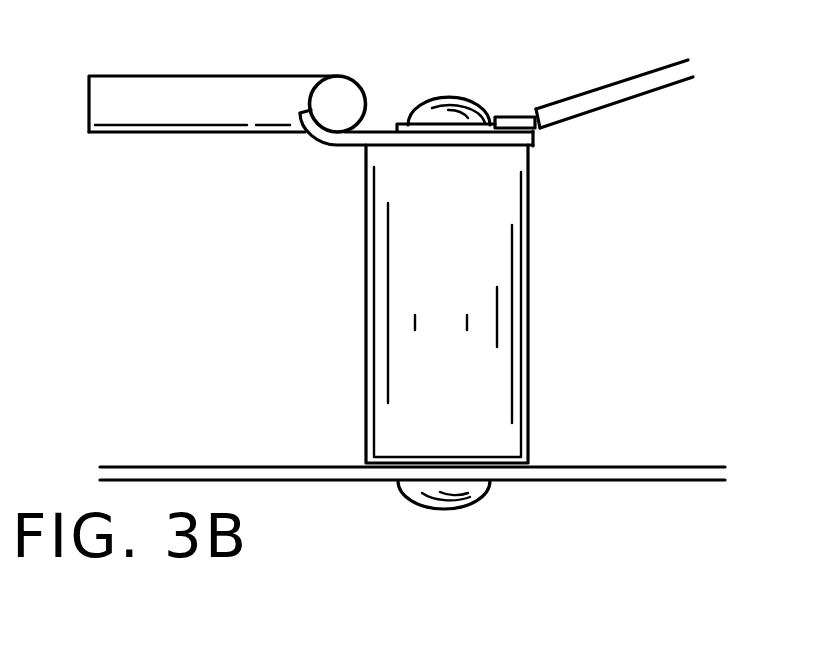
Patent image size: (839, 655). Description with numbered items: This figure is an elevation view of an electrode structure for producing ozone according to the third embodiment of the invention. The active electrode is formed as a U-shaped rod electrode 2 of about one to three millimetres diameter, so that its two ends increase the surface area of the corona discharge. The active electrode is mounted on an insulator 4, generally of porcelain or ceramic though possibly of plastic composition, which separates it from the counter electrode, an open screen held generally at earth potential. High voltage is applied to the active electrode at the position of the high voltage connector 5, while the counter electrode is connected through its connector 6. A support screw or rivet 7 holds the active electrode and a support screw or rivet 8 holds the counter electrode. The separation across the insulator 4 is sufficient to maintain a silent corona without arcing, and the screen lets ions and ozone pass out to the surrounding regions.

The main body of the active electrode 2 is at (205, 76).
The insulator 4 is at (495, 260).
The high voltage connector 5 is at (585, 97).
The connector of the counter electrode 6 is at (585, 467).
The support screw or rivet for the active electrode 7 is at (450, 97).
The support screw or rivet for the counter electrode 8 is at (447, 487).